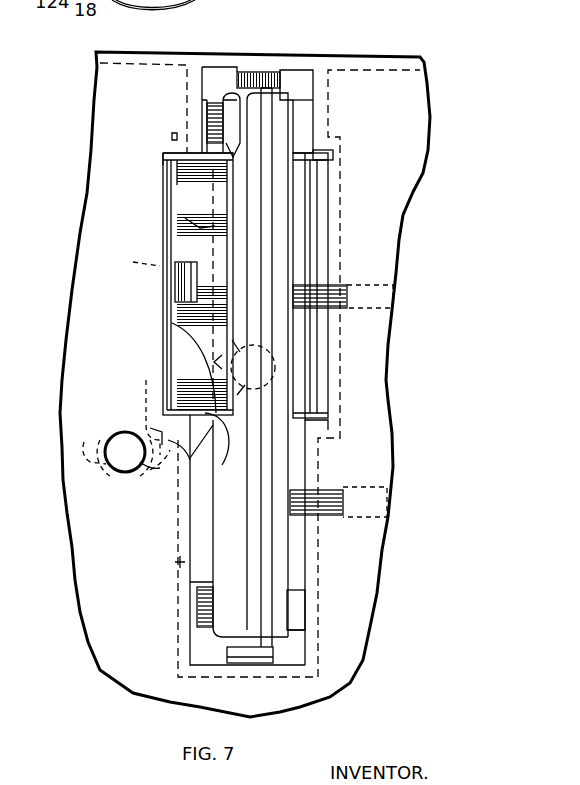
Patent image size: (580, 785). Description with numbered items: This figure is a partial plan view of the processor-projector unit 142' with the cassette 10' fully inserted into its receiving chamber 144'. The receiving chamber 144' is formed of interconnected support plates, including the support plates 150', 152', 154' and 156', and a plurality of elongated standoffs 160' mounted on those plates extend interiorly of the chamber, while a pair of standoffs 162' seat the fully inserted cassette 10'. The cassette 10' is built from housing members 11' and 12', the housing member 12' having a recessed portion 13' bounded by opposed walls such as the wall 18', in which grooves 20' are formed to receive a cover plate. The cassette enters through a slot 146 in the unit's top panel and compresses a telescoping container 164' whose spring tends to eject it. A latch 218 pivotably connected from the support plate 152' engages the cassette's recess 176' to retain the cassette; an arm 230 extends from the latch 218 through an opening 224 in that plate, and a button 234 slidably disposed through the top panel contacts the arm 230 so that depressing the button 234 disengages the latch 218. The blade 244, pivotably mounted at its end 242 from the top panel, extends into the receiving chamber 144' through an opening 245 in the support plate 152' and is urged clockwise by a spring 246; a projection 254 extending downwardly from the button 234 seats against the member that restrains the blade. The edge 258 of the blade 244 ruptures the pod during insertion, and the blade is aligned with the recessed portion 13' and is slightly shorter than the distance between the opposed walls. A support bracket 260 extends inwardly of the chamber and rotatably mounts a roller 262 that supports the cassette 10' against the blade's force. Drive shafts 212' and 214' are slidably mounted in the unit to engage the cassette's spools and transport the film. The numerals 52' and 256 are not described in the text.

The processor-projector unit 142' is at (249, 361).
The support plate 150' is at (266, 370).
The standoffs 160' is at (275, 370).
The support plate 154' is at (313, 84).
The cassette 10' is at (183, 110).
The housing member 12' is at (185, 126).
The opposed wall 18' is at (239, 125).
The support plate 152' is at (145, 336).
The grooves 20' is at (177, 261).
The standoffs 162' is at (338, 365).
The edge 258 is at (262, 240).
The housing member 11' is at (336, 117).
The blade 244 is at (197, 218).
The opening 245 is at (168, 162).
The spring 246 is at (175, 285).
The recess 176' is at (172, 431).
The end of blade 242 is at (165, 335).
The projection 254 is at (163, 403).
The button 234 is at (122, 442).
The arm 230 is at (90, 460).
The link arm 256 is at (150, 478).
The latch 218 is at (143, 473).
The opening 224 is at (187, 490).
The recessed portion 13' is at (209, 469).
The right block 52' is at (336, 285).
The slot 146 is at (332, 157).
The telescoping container 164' is at (307, 409).
The roller 262 is at (305, 338).
The drive shaft 214' is at (370, 282).
The drive shaft 212' is at (362, 486).
The support bracket 260 is at (312, 424).
The receiving chamber 144' is at (307, 542).
The support plate 156' is at (258, 681).